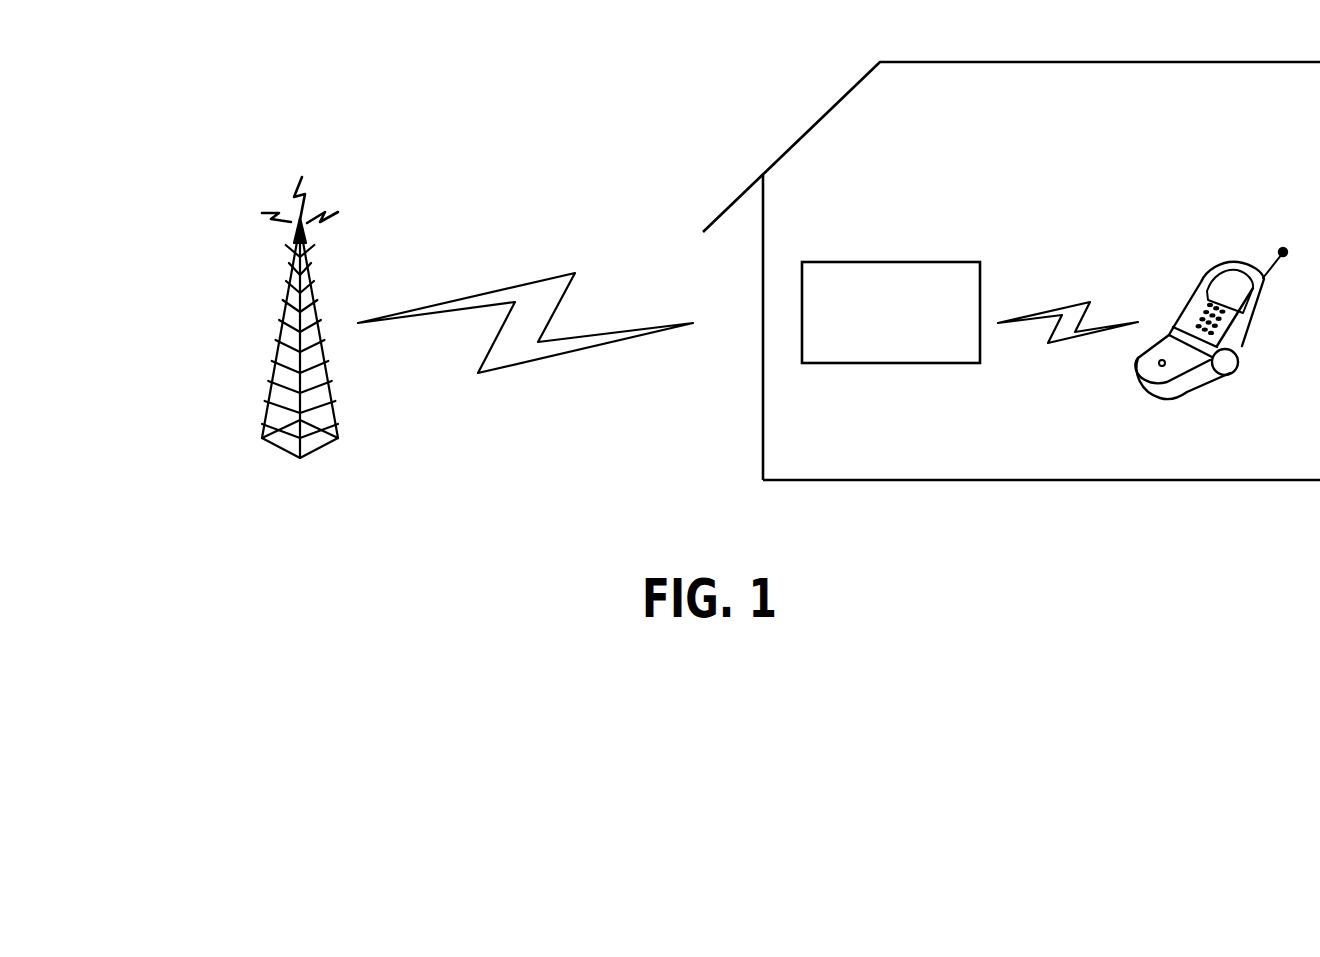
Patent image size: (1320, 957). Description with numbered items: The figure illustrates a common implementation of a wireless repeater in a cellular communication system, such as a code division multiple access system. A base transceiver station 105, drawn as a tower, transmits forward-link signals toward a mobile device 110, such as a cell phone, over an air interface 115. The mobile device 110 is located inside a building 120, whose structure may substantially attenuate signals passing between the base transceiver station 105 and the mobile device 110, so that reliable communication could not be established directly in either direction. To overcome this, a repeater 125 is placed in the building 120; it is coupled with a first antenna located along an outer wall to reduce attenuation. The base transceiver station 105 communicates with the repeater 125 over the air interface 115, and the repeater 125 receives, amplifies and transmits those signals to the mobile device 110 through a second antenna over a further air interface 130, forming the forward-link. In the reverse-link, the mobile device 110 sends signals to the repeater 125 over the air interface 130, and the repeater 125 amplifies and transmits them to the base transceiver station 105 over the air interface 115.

The base transceiver station 105 is at (282, 332).
The mobile device 110 is at (1235, 262).
The air interface 115 is at (510, 287).
The building 120 is at (1060, 62).
The repeater 125 is at (890, 262).
The air interface 130 is at (1080, 300).